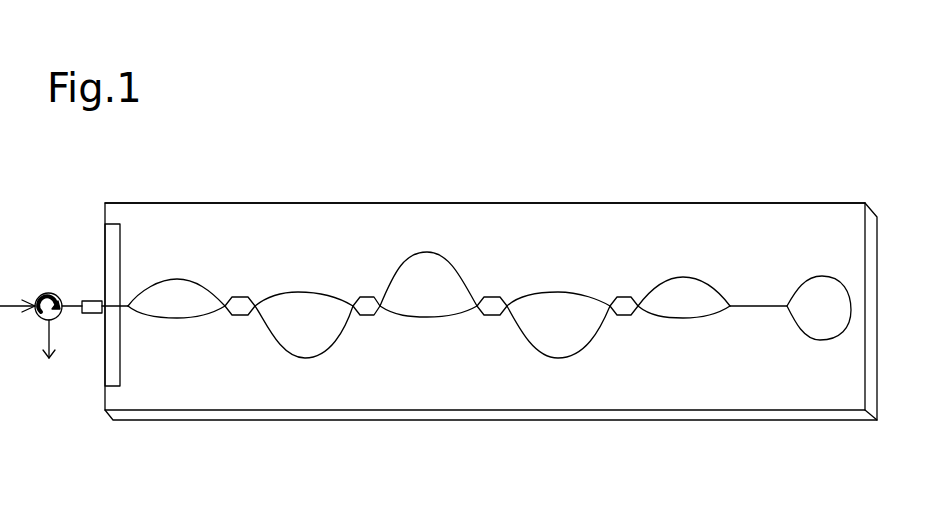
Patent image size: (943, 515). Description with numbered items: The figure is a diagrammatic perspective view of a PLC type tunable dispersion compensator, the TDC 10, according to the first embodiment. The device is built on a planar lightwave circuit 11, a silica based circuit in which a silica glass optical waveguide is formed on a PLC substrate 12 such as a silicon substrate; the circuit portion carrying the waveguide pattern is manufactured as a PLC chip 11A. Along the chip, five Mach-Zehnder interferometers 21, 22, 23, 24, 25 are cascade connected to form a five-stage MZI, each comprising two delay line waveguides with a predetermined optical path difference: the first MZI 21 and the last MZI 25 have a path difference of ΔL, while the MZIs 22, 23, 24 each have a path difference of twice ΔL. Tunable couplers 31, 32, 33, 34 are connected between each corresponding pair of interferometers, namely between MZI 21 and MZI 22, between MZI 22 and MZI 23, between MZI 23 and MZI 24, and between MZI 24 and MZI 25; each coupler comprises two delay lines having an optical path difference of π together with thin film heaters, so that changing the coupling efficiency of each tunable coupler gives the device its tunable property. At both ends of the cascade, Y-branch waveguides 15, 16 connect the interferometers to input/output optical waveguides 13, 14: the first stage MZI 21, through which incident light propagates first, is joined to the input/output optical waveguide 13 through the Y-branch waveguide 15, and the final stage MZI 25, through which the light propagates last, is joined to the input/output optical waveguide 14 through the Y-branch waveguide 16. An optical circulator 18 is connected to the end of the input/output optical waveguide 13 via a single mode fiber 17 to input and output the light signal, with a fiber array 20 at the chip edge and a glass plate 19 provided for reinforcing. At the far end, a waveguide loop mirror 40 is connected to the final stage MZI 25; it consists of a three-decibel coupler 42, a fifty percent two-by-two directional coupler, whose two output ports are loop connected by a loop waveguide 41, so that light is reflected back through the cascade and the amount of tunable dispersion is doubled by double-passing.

The PLC type TDC 10 is at (476, 165).
The planar lightwave circuit 11 is at (466, 262).
The PLC chip 11A is at (349, 197).
The PLC substrate 12 is at (288, 419).
The input/output optical waveguide 13 is at (108, 312).
The input/output optical waveguide 14 is at (755, 306).
The Y-branch waveguide 15 is at (128, 306).
The Y-branch waveguide 16 is at (730, 305).
The single mode fiber 17 is at (73, 303).
The optical circulator 18 is at (45, 293).
The glass plate 19 is at (115, 373).
The fiber array 20 is at (90, 301).
The Mach-Zehnder interferometer 21 is at (177, 330).
The Mach-Zehnder interferometer 22 is at (305, 282).
The Mach-Zehnder interferometer 23 is at (430, 328).
The Mach-Zehnder interferometer 24 is at (558, 368).
The Mach-Zehnder interferometer 25 is at (683, 269).
The tunable coupler 31 is at (233, 297).
The tunable coupler 32 is at (362, 297).
The tunable coupler 33 is at (492, 297).
The tunable coupler 34 is at (620, 297).
The waveguide loop mirror 40 is at (796, 322).
The loop waveguide 41 is at (818, 340).
The 3 dB coupler 42 is at (792, 303).